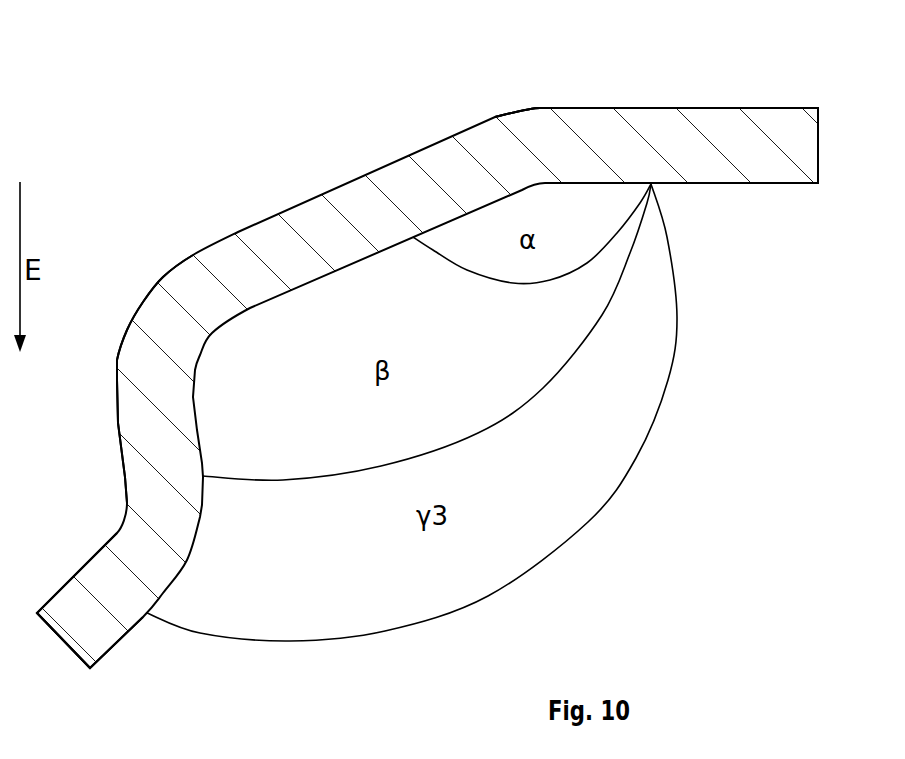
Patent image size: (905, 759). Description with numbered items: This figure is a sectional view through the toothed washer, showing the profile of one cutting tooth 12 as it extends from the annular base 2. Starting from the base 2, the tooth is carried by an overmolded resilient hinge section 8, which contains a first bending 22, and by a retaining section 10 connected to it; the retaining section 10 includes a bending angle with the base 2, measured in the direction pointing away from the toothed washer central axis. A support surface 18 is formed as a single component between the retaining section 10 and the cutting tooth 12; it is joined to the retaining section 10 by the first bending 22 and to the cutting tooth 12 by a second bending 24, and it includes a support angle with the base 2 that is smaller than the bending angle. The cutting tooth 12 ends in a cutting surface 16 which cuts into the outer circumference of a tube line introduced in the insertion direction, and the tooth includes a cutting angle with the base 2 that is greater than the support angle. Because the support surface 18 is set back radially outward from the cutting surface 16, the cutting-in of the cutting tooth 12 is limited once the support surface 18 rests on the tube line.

The annular base 2 is at (767, 120).
The resilient hinge section 8 is at (512, 110).
The first bending 22 is at (513, 107).
The retaining section 10 is at (293, 207).
The second bending 24 is at (146, 302).
The support surface 18 is at (118, 424).
The cutting tooth 12 is at (65, 598).
The cutting surface 16 is at (67, 643).